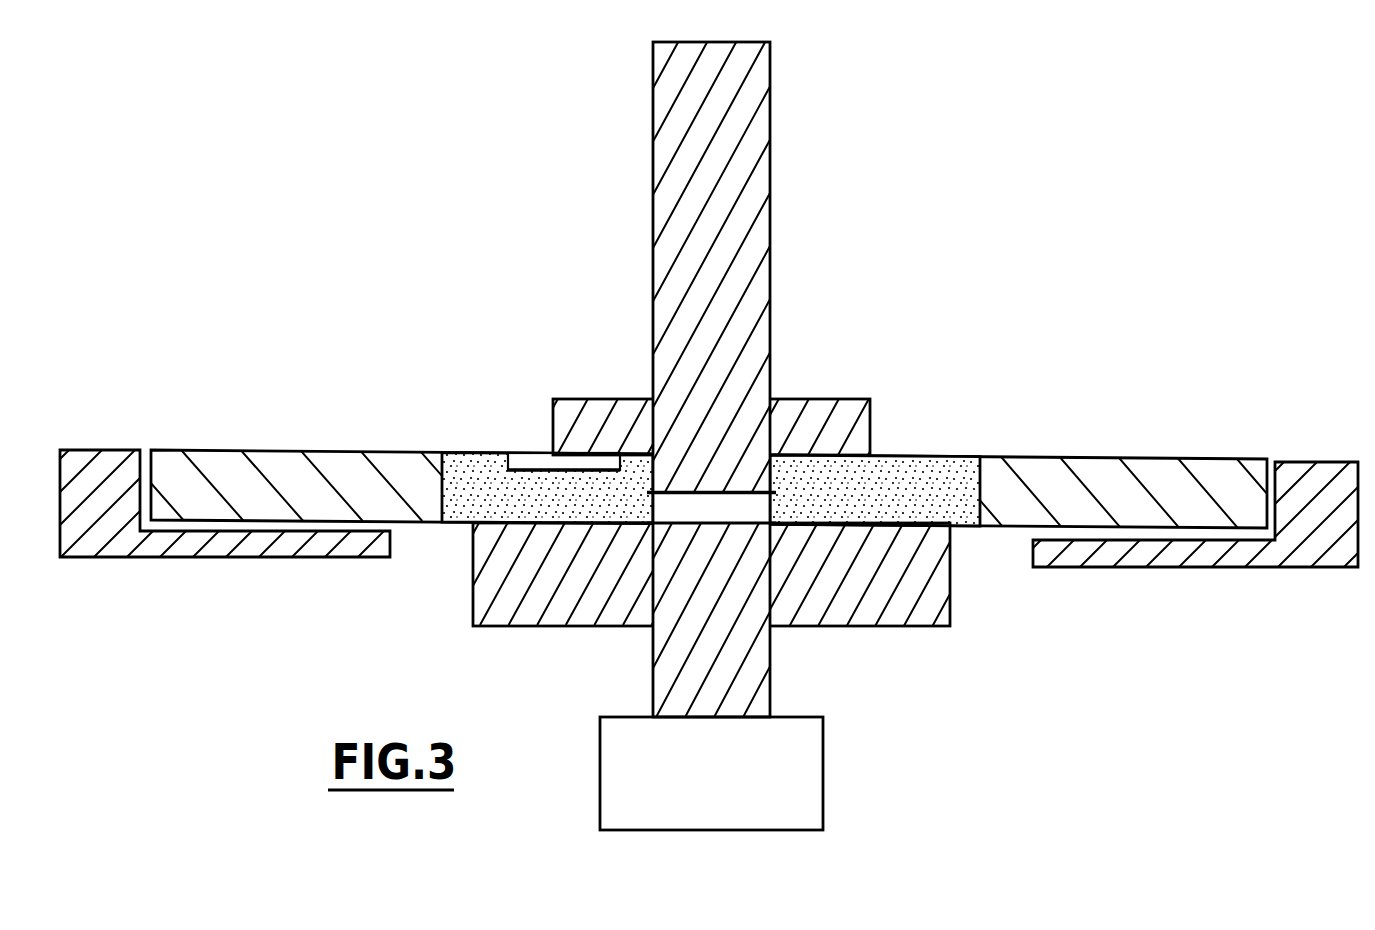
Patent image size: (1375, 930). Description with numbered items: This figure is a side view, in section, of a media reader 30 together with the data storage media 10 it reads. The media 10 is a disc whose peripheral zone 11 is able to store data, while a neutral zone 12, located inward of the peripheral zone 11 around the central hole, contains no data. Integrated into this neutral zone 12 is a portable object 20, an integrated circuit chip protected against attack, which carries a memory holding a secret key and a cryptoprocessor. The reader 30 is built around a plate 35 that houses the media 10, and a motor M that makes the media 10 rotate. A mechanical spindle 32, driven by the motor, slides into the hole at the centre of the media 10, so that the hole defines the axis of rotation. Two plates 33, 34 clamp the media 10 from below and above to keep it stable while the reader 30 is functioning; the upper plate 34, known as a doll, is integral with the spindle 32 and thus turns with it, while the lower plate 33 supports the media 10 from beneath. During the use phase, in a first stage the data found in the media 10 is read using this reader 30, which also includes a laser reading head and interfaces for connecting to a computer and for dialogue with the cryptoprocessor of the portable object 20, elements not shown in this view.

The data storage media 10 is at (709, 443).
The peripheral zone 11 is at (276, 475).
The neutral zone 12 is at (476, 452).
The portable object 20 is at (523, 453).
The media reader 30 is at (714, 436).
The mechanical spindle 32 is at (772, 83).
The plate 33 is at (893, 612).
The plate (doll) 34 is at (595, 399).
The plate 35 is at (107, 478).